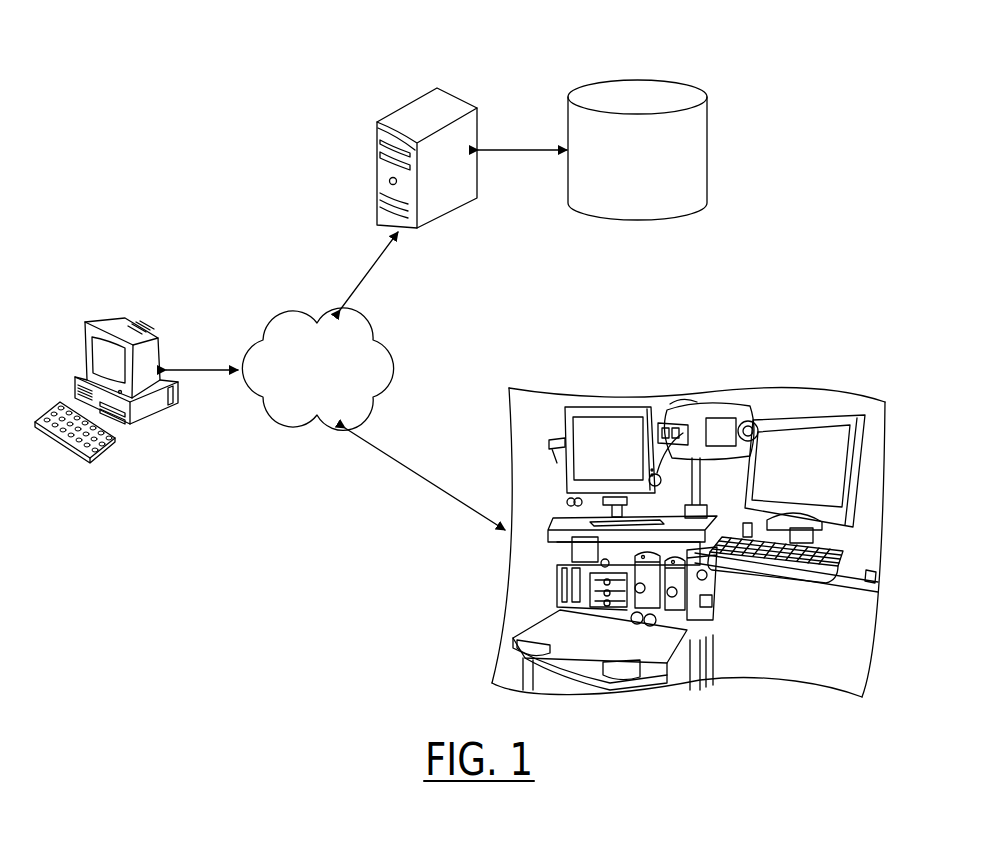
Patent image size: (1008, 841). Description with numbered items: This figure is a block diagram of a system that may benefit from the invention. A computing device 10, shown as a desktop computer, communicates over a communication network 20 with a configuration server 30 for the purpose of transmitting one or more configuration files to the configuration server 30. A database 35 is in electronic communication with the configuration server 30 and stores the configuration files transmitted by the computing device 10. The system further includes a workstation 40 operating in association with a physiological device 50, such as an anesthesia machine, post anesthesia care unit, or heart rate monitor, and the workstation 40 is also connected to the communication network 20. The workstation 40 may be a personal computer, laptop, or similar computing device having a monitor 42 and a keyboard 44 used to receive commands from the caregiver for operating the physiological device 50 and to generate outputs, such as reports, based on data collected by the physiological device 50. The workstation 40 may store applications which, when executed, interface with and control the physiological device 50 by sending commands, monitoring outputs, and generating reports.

The computing device 10 is at (98, 322).
The communication network 20 is at (290, 313).
The configuration server 30 is at (398, 110).
The database 35 is at (638, 80).
The workstation 40 is at (830, 408).
The monitor 42 is at (778, 415).
The keyboard 44 is at (763, 566).
The physiological device 50 is at (553, 413).